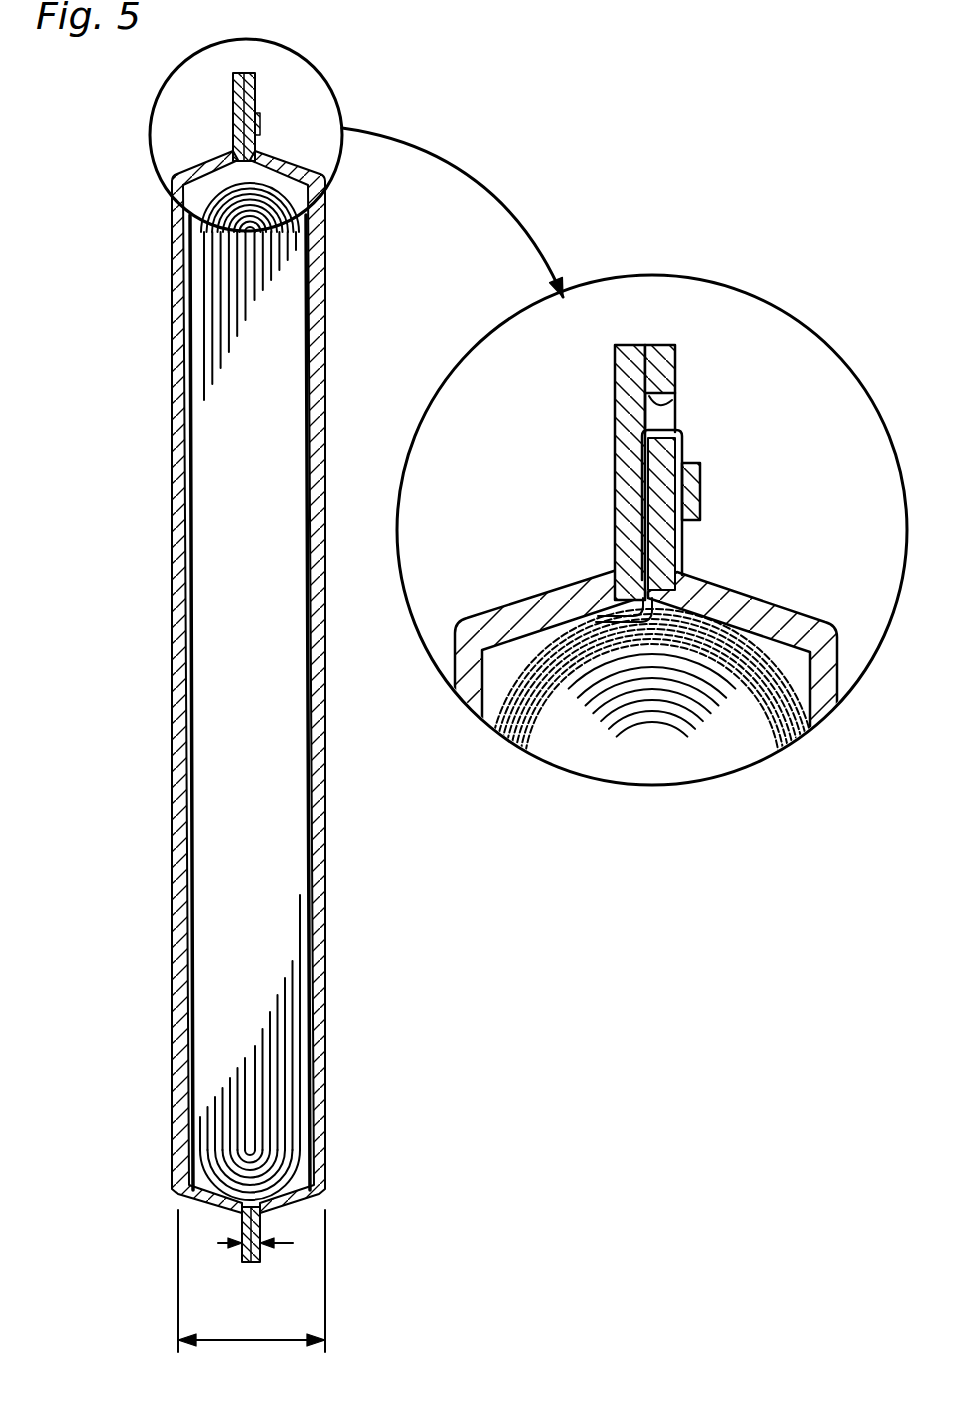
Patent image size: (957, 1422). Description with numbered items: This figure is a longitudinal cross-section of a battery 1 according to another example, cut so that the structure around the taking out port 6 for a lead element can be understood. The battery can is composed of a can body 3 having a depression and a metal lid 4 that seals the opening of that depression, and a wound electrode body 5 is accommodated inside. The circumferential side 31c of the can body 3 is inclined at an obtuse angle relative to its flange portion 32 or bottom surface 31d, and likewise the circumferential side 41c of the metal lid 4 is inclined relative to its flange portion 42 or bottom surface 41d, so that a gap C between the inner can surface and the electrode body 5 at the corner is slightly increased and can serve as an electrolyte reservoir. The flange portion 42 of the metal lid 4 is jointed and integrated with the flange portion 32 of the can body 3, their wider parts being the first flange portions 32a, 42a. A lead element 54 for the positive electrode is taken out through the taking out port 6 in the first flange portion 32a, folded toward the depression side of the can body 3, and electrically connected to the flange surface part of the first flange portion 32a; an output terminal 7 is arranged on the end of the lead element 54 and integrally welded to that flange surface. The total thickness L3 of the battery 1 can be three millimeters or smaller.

The battery 1 is at (137, 250).
The can body 3 is at (330, 715).
The metal lid 4 is at (160, 418).
The electrode body 5 is at (212, 298).
The taking out port 6 is at (680, 412).
The output terminal 7 is at (700, 495).
The lead element 54 is at (685, 445).
The circumferential side 31c is at (742, 595).
The bottom surface 31d is at (308, 823).
The flange portion 32 is at (293, 1243).
The first flange portion 32a is at (662, 375).
The circumferential side 41c is at (572, 600).
The bottom surface 41d is at (190, 617).
The flange portion 42 is at (218, 1243).
The first flange portion 42a is at (623, 368).
The gap C is at (505, 648).
The total thickness L3 is at (230, 1340).